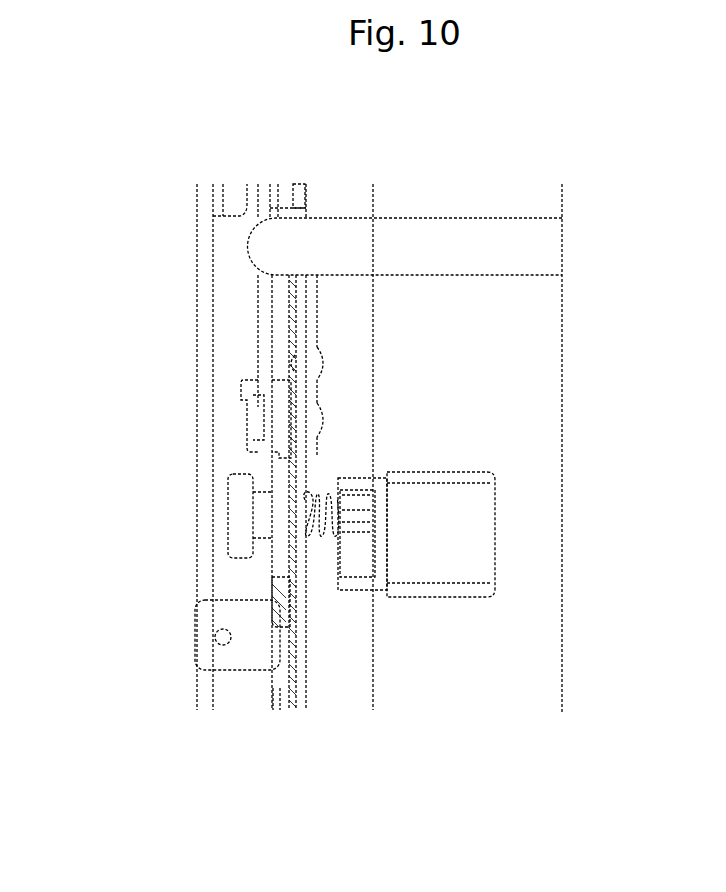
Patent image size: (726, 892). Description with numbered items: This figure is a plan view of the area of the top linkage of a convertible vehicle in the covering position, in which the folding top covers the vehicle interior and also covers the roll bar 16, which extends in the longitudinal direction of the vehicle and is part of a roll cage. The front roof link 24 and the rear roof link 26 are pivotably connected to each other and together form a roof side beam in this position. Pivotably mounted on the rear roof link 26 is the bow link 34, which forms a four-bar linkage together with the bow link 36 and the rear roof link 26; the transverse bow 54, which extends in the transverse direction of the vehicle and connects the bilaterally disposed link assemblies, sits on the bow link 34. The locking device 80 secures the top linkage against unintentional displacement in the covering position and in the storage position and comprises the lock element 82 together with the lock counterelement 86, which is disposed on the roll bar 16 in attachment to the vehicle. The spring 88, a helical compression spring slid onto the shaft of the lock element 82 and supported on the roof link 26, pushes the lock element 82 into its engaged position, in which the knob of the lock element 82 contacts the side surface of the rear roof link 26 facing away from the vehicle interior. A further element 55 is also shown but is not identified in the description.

The roll bar 16 is at (538, 533).
The front roof link 24 is at (265, 331).
The rear roof link 26 is at (280, 462).
The bow link 34 is at (298, 317).
The bow link 36 is at (288, 662).
The transverse bow 54 is at (539, 249).
The seal strip 55 is at (312, 335).
The locking device 80 is at (373, 480).
The lock element 82 is at (228, 513).
The lock counterelement 86 is at (379, 572).
The spring 88 is at (315, 493).